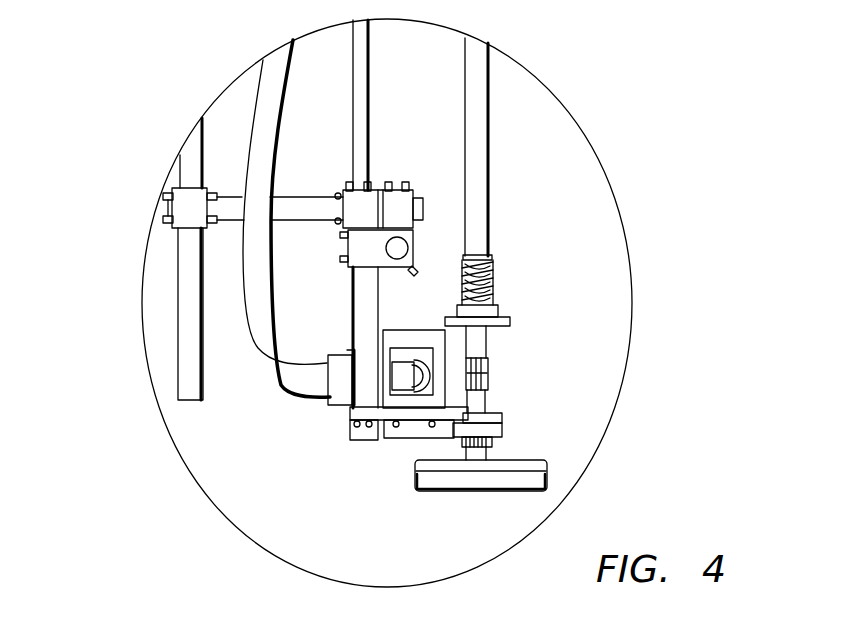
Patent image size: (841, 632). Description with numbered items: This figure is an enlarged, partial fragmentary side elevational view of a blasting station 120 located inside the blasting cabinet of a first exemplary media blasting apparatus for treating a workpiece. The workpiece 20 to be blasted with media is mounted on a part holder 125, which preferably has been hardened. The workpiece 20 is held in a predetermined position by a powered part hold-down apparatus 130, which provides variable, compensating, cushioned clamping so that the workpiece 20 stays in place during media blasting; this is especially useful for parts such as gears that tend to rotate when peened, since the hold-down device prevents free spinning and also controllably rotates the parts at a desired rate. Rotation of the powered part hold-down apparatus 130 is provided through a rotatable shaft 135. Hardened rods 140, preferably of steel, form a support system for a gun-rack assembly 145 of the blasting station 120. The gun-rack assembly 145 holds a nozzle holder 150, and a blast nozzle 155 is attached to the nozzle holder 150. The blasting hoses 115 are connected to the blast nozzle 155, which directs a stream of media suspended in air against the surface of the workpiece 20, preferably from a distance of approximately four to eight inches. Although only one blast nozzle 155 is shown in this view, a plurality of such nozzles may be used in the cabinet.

The workpiece 20 is at (492, 360).
The blasting hoses 115 is at (190, 188).
The blasting station 120 is at (666, 438).
The part holder 125 is at (492, 408).
The powered part hold-down apparatus 130 is at (500, 305).
The rotatable shaft 135 is at (488, 118).
The hardened rods 140 is at (350, 90).
The gun-rack assembly 145 is at (357, 441).
The nozzle holder 150 is at (352, 407).
The blast nozzle 155 is at (415, 352).